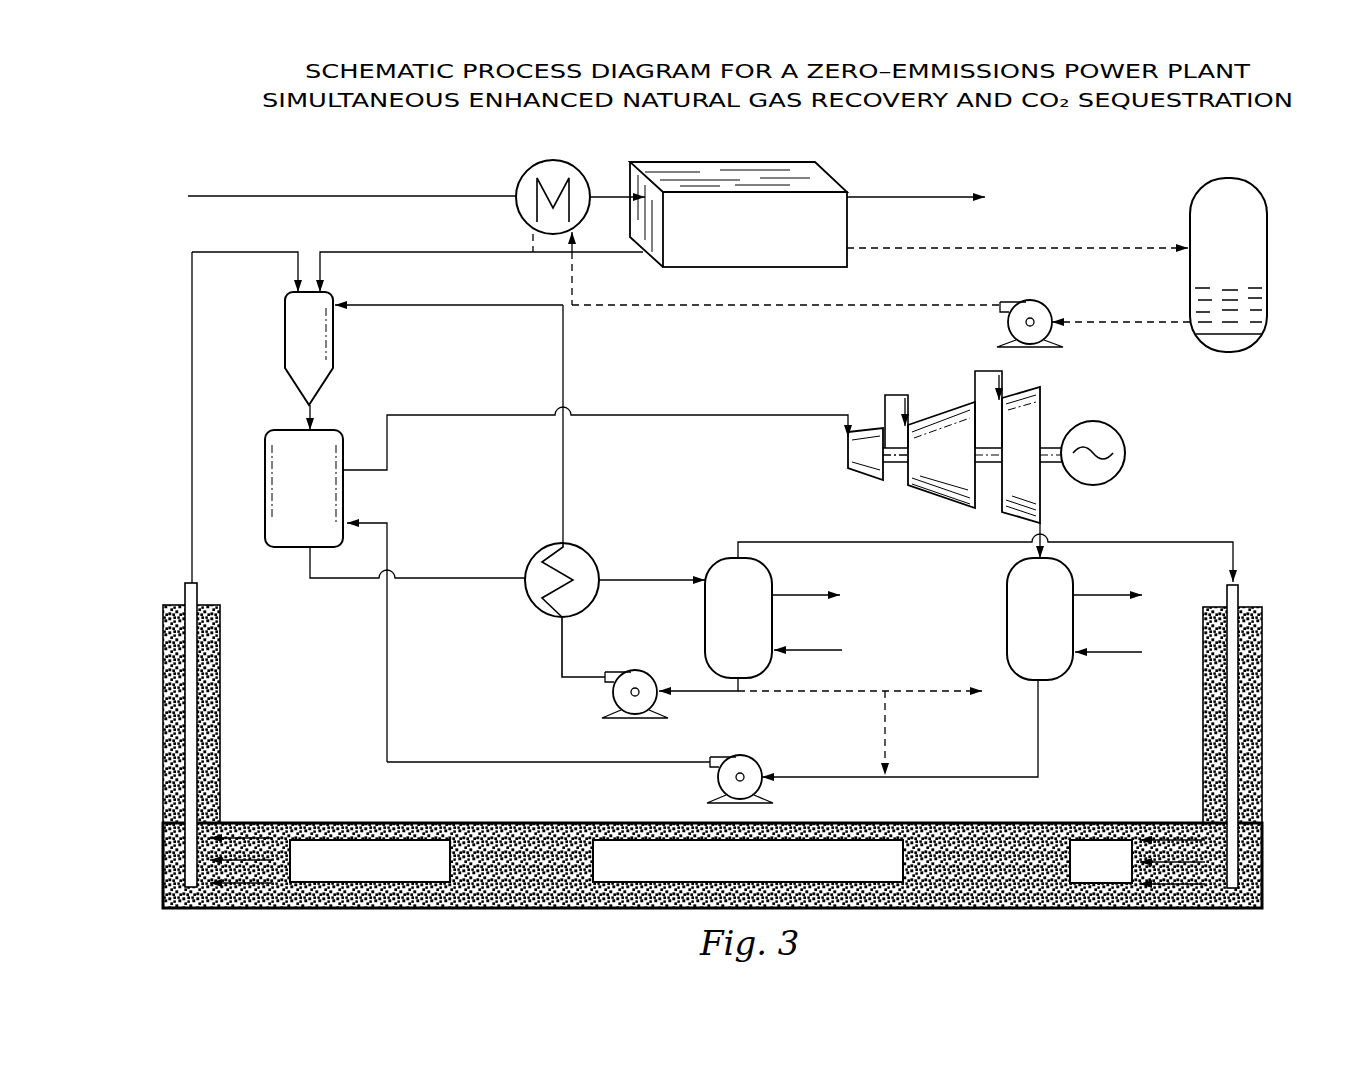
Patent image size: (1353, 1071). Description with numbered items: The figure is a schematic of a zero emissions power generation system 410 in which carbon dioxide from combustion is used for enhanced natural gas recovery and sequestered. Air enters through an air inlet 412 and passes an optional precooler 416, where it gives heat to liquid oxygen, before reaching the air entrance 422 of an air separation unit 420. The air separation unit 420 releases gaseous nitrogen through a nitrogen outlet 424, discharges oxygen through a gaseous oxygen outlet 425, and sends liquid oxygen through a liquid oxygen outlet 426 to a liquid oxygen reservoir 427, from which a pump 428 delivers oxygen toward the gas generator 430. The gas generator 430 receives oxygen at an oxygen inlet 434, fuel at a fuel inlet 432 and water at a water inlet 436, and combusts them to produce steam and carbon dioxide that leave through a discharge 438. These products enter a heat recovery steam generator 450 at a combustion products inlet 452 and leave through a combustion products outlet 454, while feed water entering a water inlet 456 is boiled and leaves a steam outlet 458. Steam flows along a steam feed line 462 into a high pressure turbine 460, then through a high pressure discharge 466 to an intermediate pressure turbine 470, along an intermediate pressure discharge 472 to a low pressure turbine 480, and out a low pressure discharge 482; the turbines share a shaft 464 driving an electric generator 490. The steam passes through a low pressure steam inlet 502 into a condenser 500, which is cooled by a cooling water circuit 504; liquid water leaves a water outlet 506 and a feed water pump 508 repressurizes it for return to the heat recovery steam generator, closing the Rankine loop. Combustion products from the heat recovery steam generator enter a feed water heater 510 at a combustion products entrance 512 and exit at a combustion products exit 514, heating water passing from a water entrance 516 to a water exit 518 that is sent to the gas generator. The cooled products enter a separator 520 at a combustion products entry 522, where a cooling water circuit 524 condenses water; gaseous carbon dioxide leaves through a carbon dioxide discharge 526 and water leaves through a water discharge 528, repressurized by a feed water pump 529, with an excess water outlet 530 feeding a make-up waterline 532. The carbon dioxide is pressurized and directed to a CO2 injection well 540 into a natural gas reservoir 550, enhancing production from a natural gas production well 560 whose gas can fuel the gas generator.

The system 410 is at (1188, 450).
The air inlet 412 is at (301, 195).
The precooler 416 is at (528, 166).
The air separation unit 420 is at (840, 168).
The air entrance 422 is at (587, 194).
The nitrogen outlet 424 is at (913, 197).
The gaseous oxygen outlet 425 is at (601, 257).
The liquid oxygen outlet 426 is at (871, 248).
The liquid oxygen reservoir 427 is at (1190, 188).
The pump 428 is at (1049, 347).
The gas generator 430 is at (286, 347).
The fuel inlet 432 is at (289, 293).
The oxygen inlet 434 is at (325, 258).
The water inlet 436 is at (339, 313).
The discharge 438 is at (300, 401).
The heat recovery steam generator 450 is at (269, 470).
The combustion products inlet 452 is at (317, 427).
The combustion products outlet 454 is at (294, 550).
The water inlet 456 is at (372, 520).
The steam outlet 458 is at (371, 470).
The high pressure turbine 460 is at (860, 479).
The steam feed line 462 is at (645, 415).
The shaft 464 is at (893, 470).
The high pressure discharge 466 is at (880, 408).
The intermediate pressure turbine 470 is at (944, 404).
The intermediate pressure discharge 472 is at (979, 378).
The low pressure turbine 480 is at (1043, 414).
The low pressure discharge 482 is at (1050, 525).
The electric generator 490 is at (1117, 427).
The condenser 500 is at (1004, 626).
The low pressure steam inlet 502 is at (1061, 560).
The cooling water circuit 504 is at (1101, 595).
The water outlet 506 is at (1046, 684).
The feed water pump 508 is at (768, 804).
The feed water heater 510 is at (565, 545).
The combustion products entrance 512 is at (529, 594).
The combustion products exit 514 is at (599, 587).
The water entrance 516 is at (550, 616).
The water exit 518 is at (548, 550).
The separator 520 is at (724, 553).
The combustion products entry 522 is at (701, 567).
The cooling water circuit 524 is at (820, 652).
The carbon dioxide discharge 526 is at (828, 544).
The water discharge 528 is at (744, 693).
The feed water pump 529 is at (645, 719).
The excess water outlet 530 is at (928, 693).
The make-up waterline 532 is at (888, 724).
The CO2 injection well 540 is at (1262, 650).
The natural gas reservoir 550 is at (885, 825).
The natural gas production well 560 is at (222, 640).